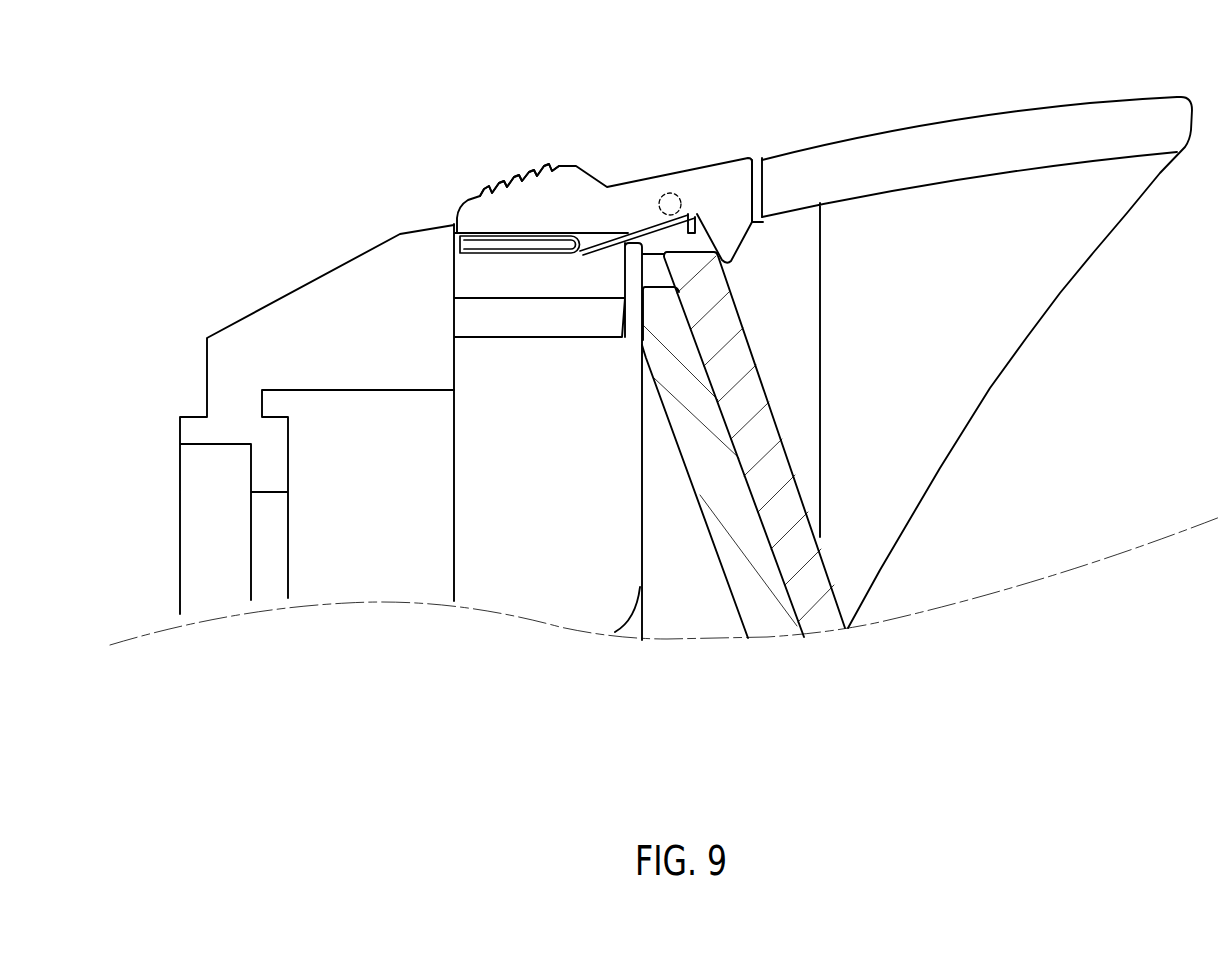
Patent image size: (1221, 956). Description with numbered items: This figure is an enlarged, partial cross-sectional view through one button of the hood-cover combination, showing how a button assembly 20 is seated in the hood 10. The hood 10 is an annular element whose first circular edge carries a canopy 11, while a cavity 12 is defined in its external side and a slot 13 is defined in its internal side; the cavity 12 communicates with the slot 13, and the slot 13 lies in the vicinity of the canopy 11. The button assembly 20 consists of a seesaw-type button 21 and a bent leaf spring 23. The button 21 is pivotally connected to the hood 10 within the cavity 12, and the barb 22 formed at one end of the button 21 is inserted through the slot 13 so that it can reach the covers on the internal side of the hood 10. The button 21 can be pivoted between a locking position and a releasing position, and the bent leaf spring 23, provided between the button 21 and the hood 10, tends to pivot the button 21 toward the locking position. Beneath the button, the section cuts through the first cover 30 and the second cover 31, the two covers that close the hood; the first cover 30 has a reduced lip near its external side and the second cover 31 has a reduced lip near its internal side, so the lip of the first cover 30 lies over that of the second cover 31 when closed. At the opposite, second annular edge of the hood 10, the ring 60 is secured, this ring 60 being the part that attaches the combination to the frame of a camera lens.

The hood 10 is at (452, 266).
The canopy 11 is at (986, 155).
The cavity 12 is at (597, 247).
The slot 13 is at (695, 230).
The button assembly 20 is at (528, 87).
The button 21 is at (552, 203).
The barb 22 is at (742, 233).
The bent leaf spring 23 is at (498, 234).
The first cover 30 is at (768, 450).
The second cover 31 is at (753, 567).
The ring 60 is at (298, 328).